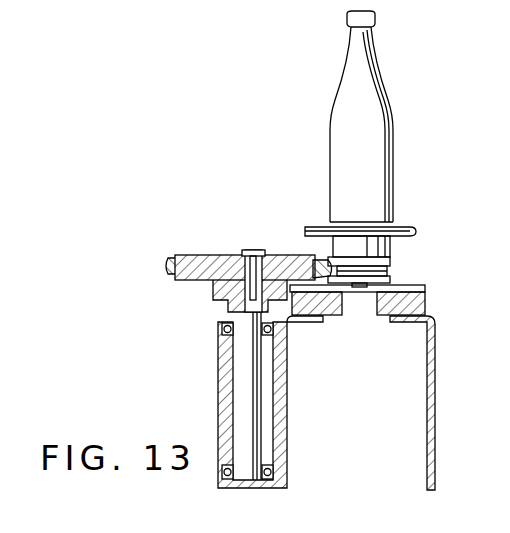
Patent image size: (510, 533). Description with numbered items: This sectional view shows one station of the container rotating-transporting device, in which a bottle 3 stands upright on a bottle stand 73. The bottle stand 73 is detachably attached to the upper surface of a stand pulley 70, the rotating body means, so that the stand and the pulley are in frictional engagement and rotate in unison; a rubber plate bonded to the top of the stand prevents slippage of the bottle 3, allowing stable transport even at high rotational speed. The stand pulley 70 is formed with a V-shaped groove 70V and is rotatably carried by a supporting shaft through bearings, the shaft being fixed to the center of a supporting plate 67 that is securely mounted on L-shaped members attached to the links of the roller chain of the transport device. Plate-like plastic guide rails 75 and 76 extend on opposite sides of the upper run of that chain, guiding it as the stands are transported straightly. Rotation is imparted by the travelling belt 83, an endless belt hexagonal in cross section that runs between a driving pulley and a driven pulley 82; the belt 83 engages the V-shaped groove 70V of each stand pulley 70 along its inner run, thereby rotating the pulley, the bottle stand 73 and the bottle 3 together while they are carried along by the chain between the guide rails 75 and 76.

The bottle 3 is at (338, 128).
The bottle stand 73 is at (402, 228).
The stand pulley 70 is at (392, 244).
The V-shaped groove 70V is at (392, 272).
The driven pulley 82 is at (192, 258).
The travelling belt 83 is at (318, 262).
The supporting plate 67 is at (358, 292).
The guide rail 75 is at (333, 316).
The guide rail 76 is at (380, 316).